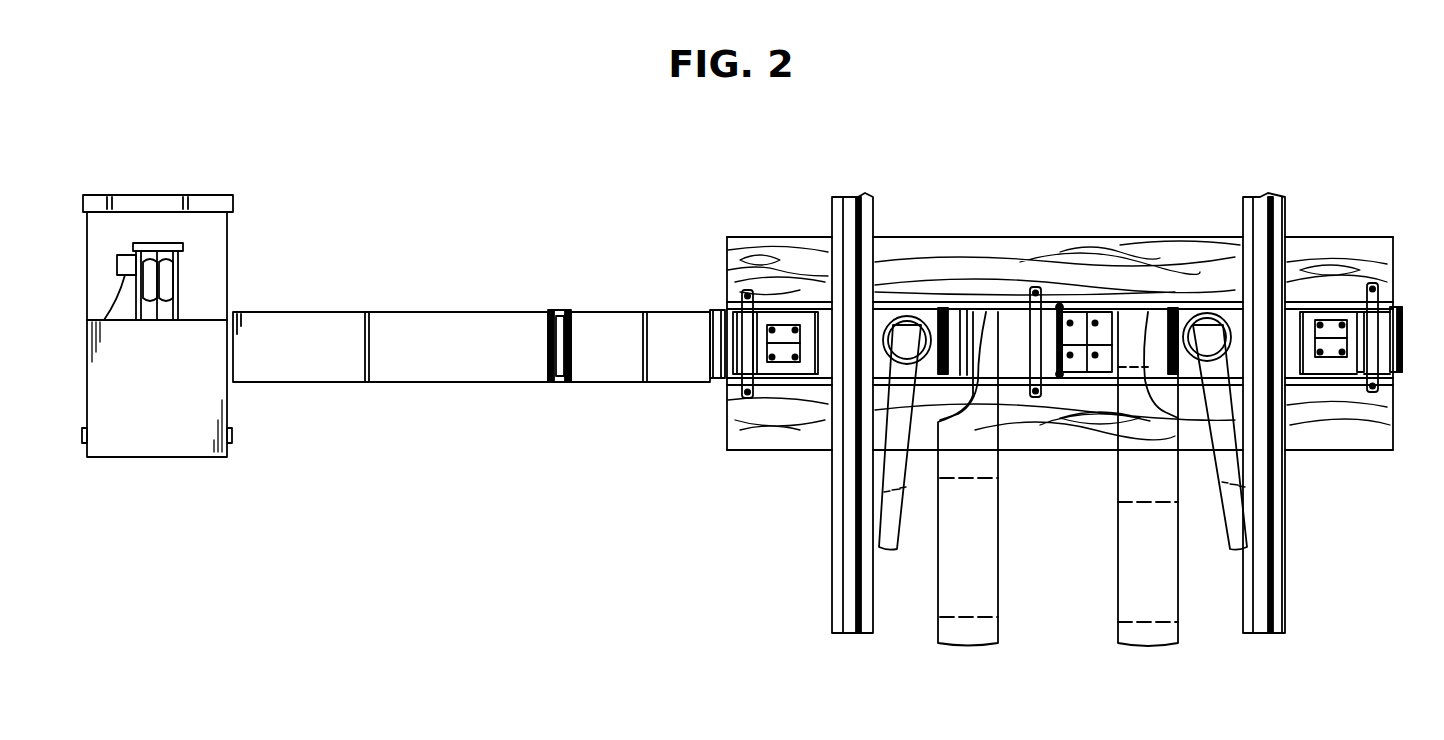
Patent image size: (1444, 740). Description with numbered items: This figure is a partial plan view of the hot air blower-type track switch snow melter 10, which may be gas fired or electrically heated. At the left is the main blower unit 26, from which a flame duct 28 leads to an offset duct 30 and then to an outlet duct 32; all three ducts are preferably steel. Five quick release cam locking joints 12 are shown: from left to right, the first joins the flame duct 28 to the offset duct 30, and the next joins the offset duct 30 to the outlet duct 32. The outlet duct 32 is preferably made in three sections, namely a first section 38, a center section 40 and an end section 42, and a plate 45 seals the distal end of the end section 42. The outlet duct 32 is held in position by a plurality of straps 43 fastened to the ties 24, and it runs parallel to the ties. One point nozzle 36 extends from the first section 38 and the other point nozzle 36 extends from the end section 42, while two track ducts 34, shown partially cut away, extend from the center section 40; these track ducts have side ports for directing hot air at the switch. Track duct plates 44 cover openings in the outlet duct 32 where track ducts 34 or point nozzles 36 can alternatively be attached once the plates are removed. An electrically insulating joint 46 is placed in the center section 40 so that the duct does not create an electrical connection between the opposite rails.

The hot air blower-type track switch snow melter 10 is at (474, 230).
The quick release cam locking joint 12 is at (948, 308).
The tie 24 is at (748, 242).
The main blower unit 26 is at (157, 195).
The flame duct 28 is at (305, 385).
The offset duct 30 is at (608, 312).
The outlet duct 32 is at (1318, 292).
The track duct 34 is at (993, 587).
The point nozzle 36 is at (892, 540).
The first section 38 is at (895, 318).
The center section 40 is at (1063, 309).
The end section 42 is at (1312, 384).
The strap 43 is at (757, 298).
The track duct plate 44 is at (783, 365).
The plate 45 is at (1401, 345).
The electrically insulating joint 46 is at (1110, 312).